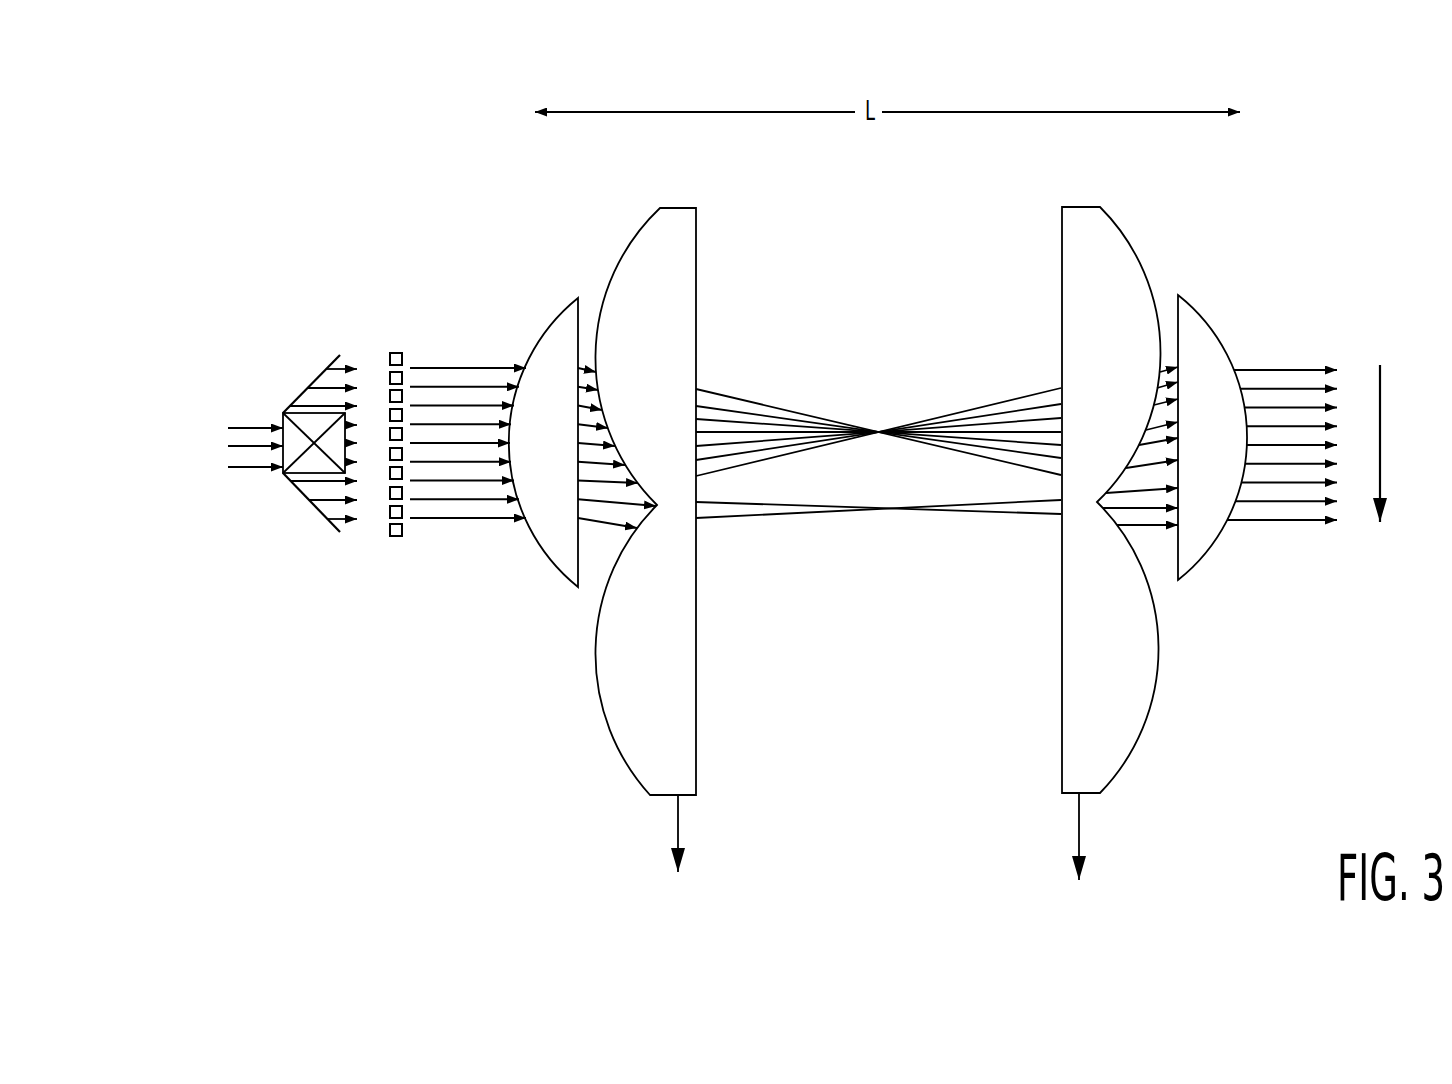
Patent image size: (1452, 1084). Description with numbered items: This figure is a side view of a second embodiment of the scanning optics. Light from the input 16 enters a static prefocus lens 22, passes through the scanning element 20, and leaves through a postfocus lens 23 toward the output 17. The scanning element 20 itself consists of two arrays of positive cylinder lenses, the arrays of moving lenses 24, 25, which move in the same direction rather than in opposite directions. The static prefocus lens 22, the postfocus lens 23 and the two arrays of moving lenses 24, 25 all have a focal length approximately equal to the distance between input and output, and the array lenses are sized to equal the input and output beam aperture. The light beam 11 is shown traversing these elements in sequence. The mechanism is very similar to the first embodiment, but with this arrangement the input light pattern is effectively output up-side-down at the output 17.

The static light beams 11 is at (468, 366).
The input 16 is at (166, 347).
The output 17 is at (1408, 355).
The scanning element 20 is at (1098, 188).
The static prefocus lens 22 is at (553, 572).
The postfocus lens 23 is at (1188, 573).
The array of moving lenses 24 is at (696, 662).
The array of moving lenses 25 is at (1062, 752).